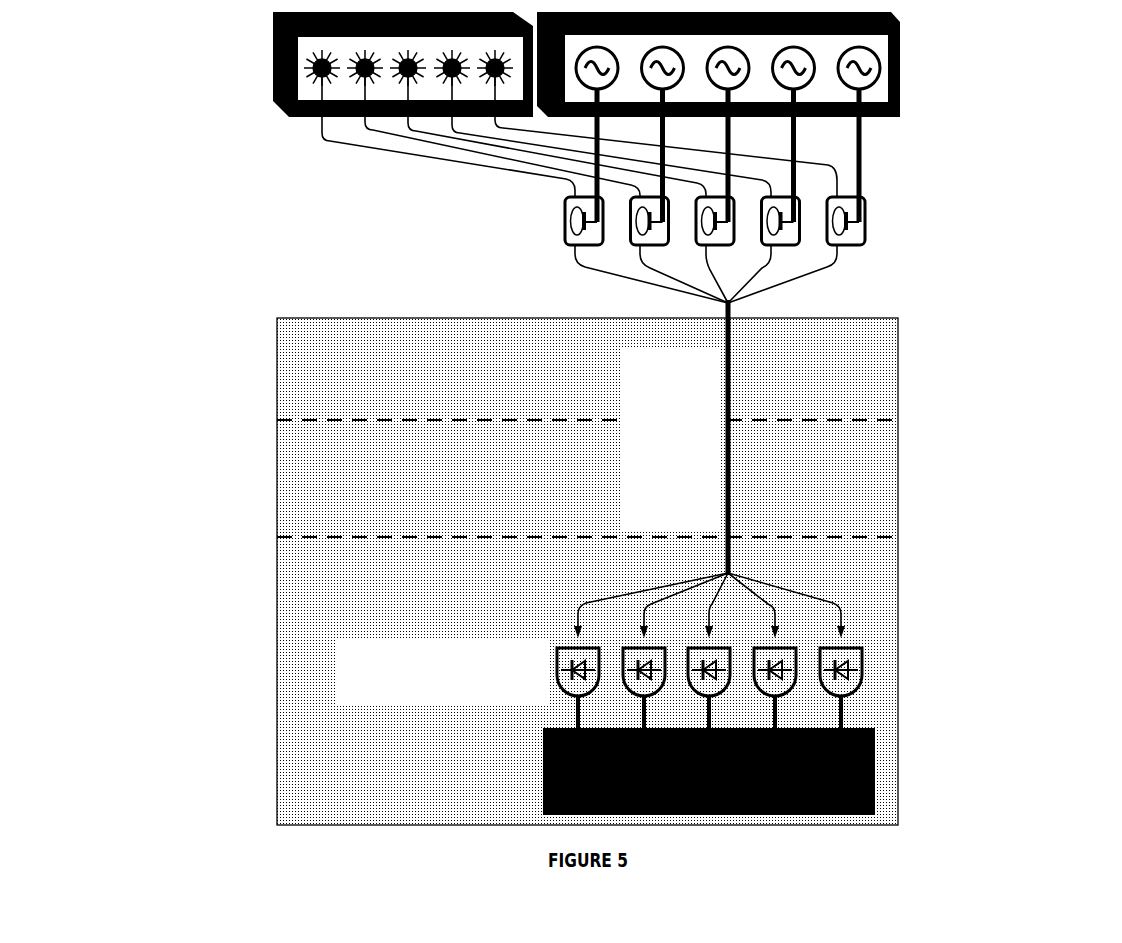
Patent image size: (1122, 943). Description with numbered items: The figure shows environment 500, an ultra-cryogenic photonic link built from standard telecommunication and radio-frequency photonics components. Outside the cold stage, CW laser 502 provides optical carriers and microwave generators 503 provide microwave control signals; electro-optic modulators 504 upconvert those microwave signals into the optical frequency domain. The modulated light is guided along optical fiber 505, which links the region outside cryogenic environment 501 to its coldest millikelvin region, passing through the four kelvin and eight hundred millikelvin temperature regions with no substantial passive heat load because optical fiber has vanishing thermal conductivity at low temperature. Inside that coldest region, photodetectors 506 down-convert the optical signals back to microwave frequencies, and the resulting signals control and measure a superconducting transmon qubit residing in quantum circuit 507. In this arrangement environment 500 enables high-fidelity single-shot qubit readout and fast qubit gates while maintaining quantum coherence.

The environment 500 is at (136, 38).
The cryogenic environment 501 is at (290, 527).
The CW laser 502 is at (283, 98).
The microwave generators 503 is at (897, 78).
The electro-optic modulators 504 is at (562, 224).
The optical fiber 505 is at (727, 517).
The photodetectors 506 is at (556, 683).
The quantum circuit 507 is at (855, 760).